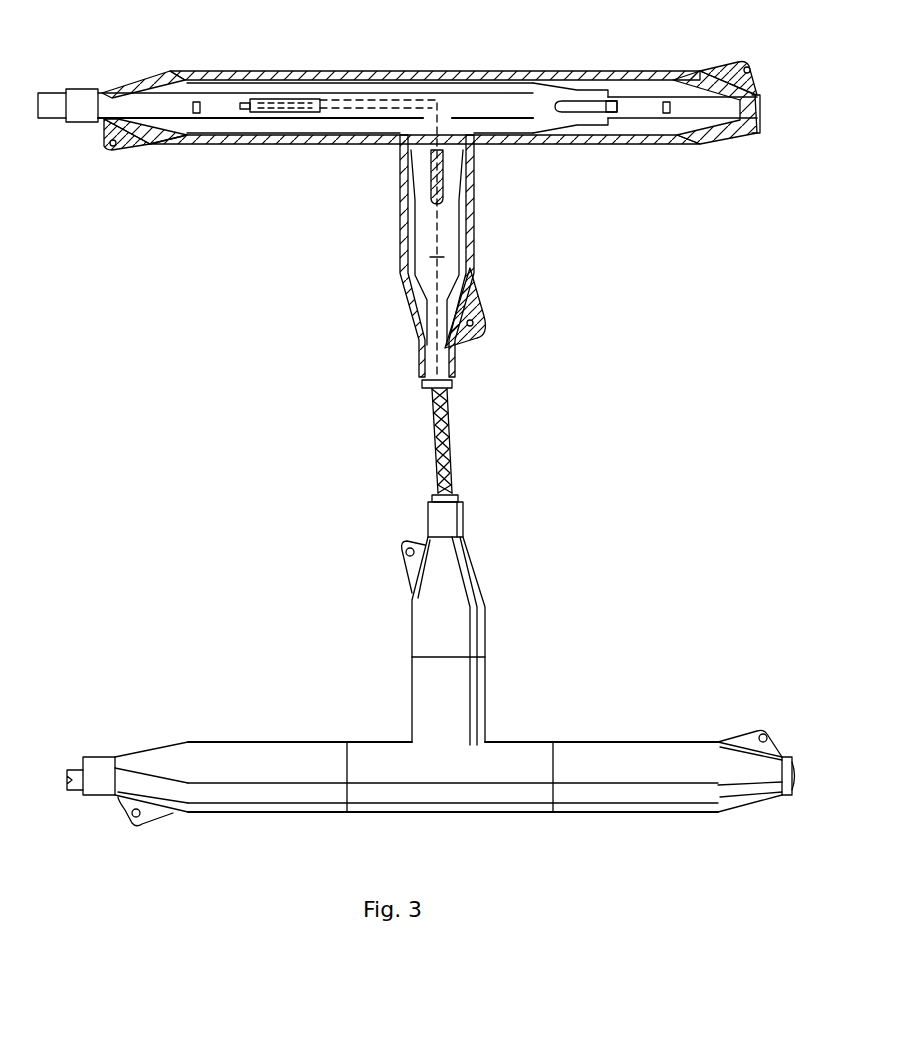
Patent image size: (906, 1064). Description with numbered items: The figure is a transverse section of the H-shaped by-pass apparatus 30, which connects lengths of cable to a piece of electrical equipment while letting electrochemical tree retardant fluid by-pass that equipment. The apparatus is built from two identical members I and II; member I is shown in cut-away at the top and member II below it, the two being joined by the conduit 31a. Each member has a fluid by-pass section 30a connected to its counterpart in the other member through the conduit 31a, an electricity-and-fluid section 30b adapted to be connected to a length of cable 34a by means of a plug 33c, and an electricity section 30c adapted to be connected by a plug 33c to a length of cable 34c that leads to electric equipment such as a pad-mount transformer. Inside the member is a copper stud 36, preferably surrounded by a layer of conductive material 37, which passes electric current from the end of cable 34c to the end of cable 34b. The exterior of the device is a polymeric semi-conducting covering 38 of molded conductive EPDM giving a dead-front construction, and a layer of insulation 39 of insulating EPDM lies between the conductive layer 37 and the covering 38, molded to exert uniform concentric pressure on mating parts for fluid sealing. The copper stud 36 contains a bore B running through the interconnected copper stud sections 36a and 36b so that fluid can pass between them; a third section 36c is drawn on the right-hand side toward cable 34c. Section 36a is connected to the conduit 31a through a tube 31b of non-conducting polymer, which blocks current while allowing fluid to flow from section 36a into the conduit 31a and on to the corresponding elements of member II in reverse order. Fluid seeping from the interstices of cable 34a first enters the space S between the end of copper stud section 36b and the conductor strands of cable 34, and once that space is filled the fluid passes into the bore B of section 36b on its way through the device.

The by-pass apparatus 30 is at (327, 284).
The fluid by-pass section 30a is at (471, 181).
The electricity-and-fluid section 30b is at (314, 72).
The electricity section 30c is at (498, 105).
The conduit 31a is at (450, 450).
The tube 31b is at (440, 322).
The plug 33c is at (620, 70).
The cable 34 is at (203, 112).
The length of cable 34a is at (78, 100).
The length of cable 34b is at (160, 107).
The length of cable 34c is at (682, 100).
The copper stud 36 is at (440, 100).
The copper stud section 36a is at (437, 243).
The copper stud section 36b is at (328, 108).
The right insulator tube 36c is at (577, 74).
The layer of conductive material 37 is at (470, 93).
The semi-conducting covering 38 is at (540, 107).
The layer of insulation 39 is at (667, 127).
The space S is at (225, 107).
The bore B is at (350, 100).
The member I is at (360, 332).
The member II is at (307, 588).